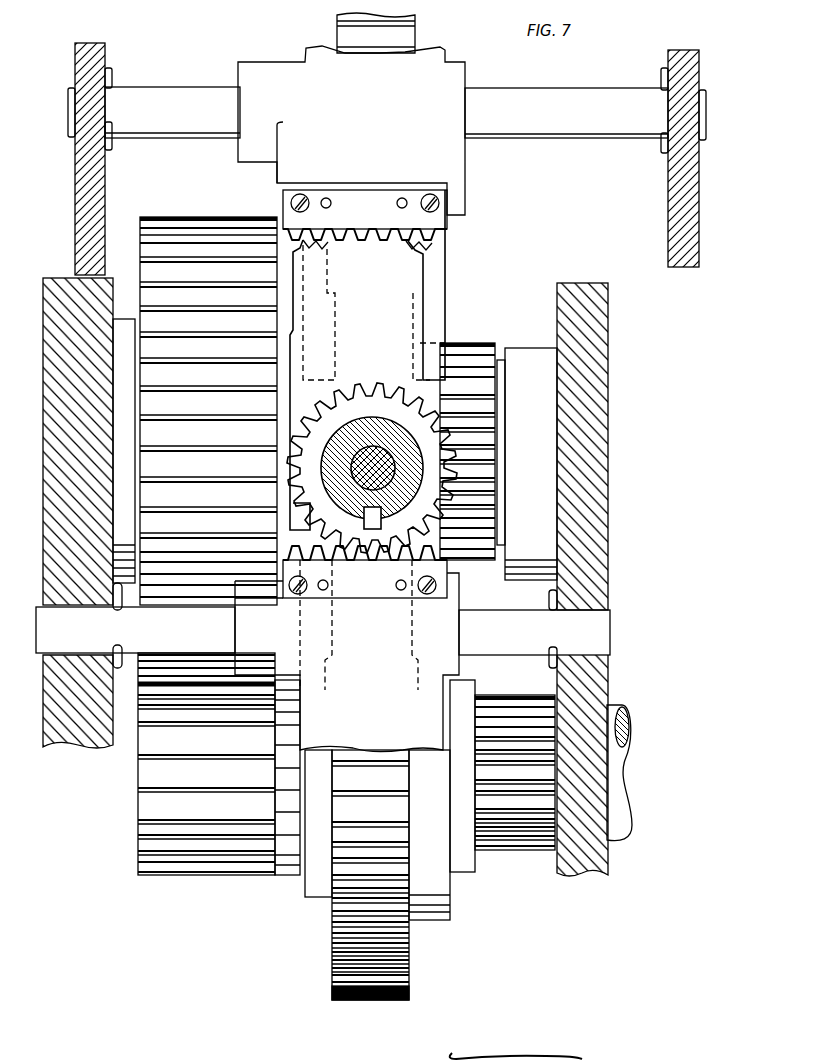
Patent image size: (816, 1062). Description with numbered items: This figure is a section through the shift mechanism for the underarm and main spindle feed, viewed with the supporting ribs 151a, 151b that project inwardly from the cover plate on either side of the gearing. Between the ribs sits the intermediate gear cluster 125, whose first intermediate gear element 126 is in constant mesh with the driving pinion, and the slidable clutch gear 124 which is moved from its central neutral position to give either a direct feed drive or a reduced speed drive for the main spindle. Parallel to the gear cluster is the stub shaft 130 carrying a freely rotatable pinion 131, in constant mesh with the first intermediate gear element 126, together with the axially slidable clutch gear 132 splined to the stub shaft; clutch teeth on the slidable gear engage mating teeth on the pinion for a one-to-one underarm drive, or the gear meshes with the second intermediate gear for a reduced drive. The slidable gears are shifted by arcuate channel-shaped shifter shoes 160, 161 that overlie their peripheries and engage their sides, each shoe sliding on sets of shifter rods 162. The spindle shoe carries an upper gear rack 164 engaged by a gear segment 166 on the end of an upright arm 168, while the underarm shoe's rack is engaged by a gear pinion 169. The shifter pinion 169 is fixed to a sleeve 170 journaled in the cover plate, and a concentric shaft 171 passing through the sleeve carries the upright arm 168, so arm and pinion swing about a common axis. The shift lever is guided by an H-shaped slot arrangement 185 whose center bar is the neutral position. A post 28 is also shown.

The frame post 28 is at (697, 187).
The slidable clutch gear 124 is at (410, 35).
The gear cluster 125 is at (131, 220).
The first intermediate gear element 126 is at (200, 220).
The stub shaft 130 is at (517, 845).
The pinion 131 is at (195, 880).
The slidable clutch gear 132 is at (340, 957).
The rib 151a is at (68, 748).
The rib 151b is at (600, 453).
The shifter shoe 160 is at (455, 78).
The shifter shoe 161 is at (245, 630).
The shifter rods 162 is at (580, 98).
The gear rack 164 is at (440, 241).
The gear segment 166 is at (424, 246).
The upright arm 168 is at (415, 282).
The gear pinion 169 is at (372, 390).
The sleeve 170 is at (352, 418).
The concentric shaft 171 is at (385, 418).
The H-shaped slot arrangement 185 is at (462, 558).